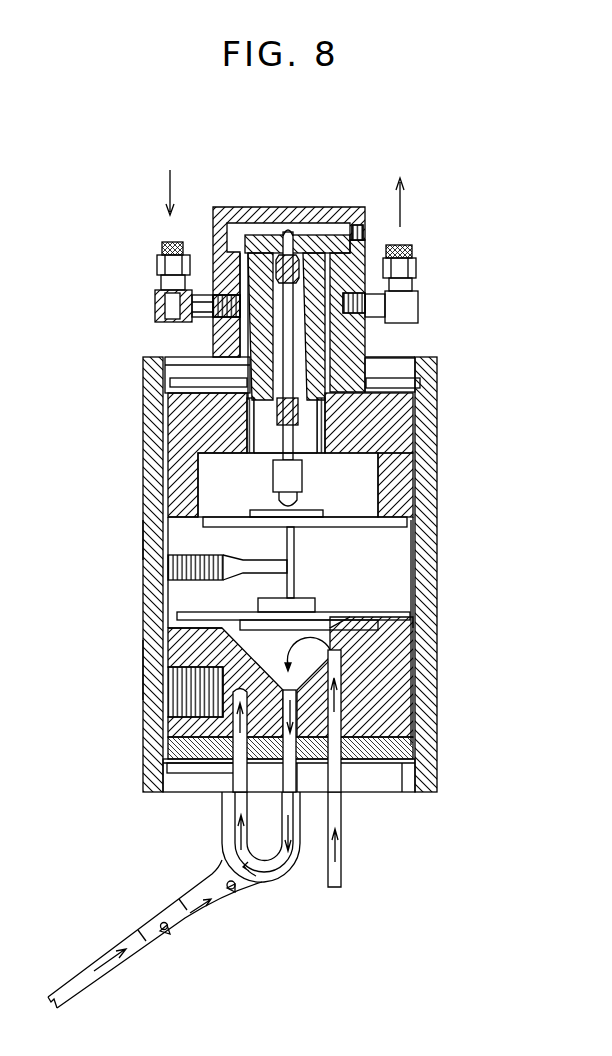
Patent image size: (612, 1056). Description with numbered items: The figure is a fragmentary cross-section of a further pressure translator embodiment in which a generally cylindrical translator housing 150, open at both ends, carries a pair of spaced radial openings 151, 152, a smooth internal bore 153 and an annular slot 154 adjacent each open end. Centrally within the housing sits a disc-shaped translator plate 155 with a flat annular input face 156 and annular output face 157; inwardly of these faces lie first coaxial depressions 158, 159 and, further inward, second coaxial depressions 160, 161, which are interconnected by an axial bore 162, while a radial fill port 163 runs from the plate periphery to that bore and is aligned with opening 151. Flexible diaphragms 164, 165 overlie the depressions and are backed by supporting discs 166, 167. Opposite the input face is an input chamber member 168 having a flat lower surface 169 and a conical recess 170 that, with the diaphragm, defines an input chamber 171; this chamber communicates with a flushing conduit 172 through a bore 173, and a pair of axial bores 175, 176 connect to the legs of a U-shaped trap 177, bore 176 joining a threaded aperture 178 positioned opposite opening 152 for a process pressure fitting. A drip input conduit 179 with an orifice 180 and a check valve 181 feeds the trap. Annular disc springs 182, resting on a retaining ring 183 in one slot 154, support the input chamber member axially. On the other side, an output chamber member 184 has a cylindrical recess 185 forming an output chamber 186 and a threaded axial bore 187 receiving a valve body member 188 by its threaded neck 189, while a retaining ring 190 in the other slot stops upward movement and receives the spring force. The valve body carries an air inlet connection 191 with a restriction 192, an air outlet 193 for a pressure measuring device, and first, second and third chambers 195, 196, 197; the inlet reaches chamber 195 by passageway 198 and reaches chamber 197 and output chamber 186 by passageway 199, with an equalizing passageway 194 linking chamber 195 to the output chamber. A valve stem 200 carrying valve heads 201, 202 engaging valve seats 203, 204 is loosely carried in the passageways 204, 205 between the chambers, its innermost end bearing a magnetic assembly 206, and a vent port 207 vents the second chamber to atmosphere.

The translator housing 150 is at (150, 424).
The radial opening 151 is at (150, 537).
The radial opening 152 is at (150, 655).
The internal bore 153 is at (170, 511).
The annular slot 154 is at (168, 381).
The translator plate 155 is at (395, 562).
The annular input face 156 is at (405, 620).
The annular output face 157 is at (340, 516).
The first coaxial depression 158 is at (380, 606).
The first coaxial depression 159 is at (365, 523).
The second coaxial depression 160 is at (345, 604).
The second coaxial depression 161 is at (296, 540).
The axial bore 162 is at (294, 556).
The fill port 163 is at (180, 587).
The flexible diaphragm 164 is at (363, 611).
The flexible diaphragm 165 is at (350, 513).
The supporting disc 166 is at (335, 630).
The supporting disc 167 is at (303, 503).
The input chamber member 168 is at (400, 710).
The lower surface 169 is at (410, 757).
The conical recess 170 is at (175, 626).
The input chamber 171 is at (242, 654).
The flushing conduit 172 is at (343, 855).
The bore 173 is at (352, 765).
The axial bore 175 is at (305, 770).
The axial bore 176 is at (232, 716).
The U-shaped trap 177 is at (279, 874).
The threaded aperture 178 is at (185, 710).
The drip input conduit 179 is at (118, 958).
The orifice 180 is at (165, 926).
The check valve 181 is at (240, 890).
The disc springs 182 is at (165, 744).
The retaining ring 183 is at (408, 790).
The output chamber member 184 is at (403, 402).
The cylindrical recess 185 is at (200, 475).
The output chamber 186 is at (258, 484).
The threaded axial bore 187 is at (370, 432).
The valve body member 188 is at (350, 342).
The threaded neck 189 is at (330, 442).
The retaining ring 190 is at (405, 380).
The air inlet connection 191 is at (158, 300).
The restriction 192 is at (200, 318).
The air outlet 193 is at (417, 303).
The equalizing passageway 194 is at (410, 334).
The first chamber 195 is at (305, 230).
The second chamber 196 is at (400, 251).
The third chamber 197 is at (325, 420).
The passageway 198 is at (232, 273).
The passageway 199 is at (250, 373).
The valve stem 200 is at (283, 240).
The valve head 201 is at (253, 262).
The valve head 202 is at (250, 420).
The valve seat 203 is at (345, 212).
The valve seat 204 is at (278, 265).
The passageway 205 is at (277, 368).
The magnetic assembly 206 is at (303, 469).
The vent port 207 is at (393, 279).